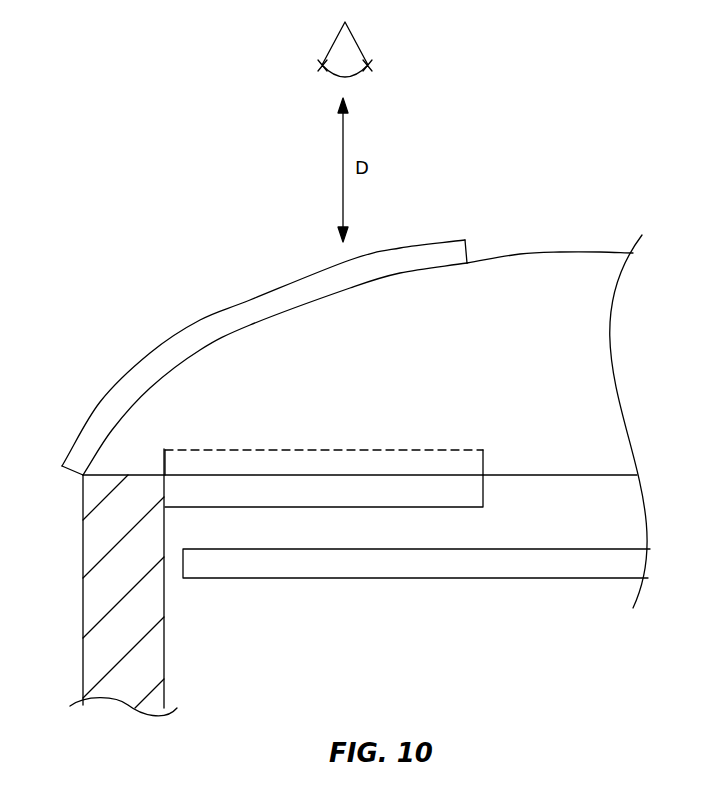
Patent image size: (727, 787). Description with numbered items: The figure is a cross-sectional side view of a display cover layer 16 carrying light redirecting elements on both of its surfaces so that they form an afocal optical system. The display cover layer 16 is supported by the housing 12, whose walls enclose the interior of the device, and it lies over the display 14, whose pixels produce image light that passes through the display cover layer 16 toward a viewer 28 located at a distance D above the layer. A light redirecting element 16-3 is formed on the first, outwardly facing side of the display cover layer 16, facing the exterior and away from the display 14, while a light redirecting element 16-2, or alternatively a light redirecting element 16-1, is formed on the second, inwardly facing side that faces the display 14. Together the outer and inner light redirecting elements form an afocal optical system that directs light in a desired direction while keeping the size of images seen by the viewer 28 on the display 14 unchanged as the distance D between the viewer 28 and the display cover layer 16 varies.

The viewer 28 is at (360, 42).
The display cover layer 16 is at (592, 362).
The light redirecting element 16-3 is at (105, 403).
The light redirecting element 16-2 is at (470, 458).
The light redirecting element 16-1 is at (470, 490).
The display 14 is at (465, 580).
The housing 12 is at (98, 647).